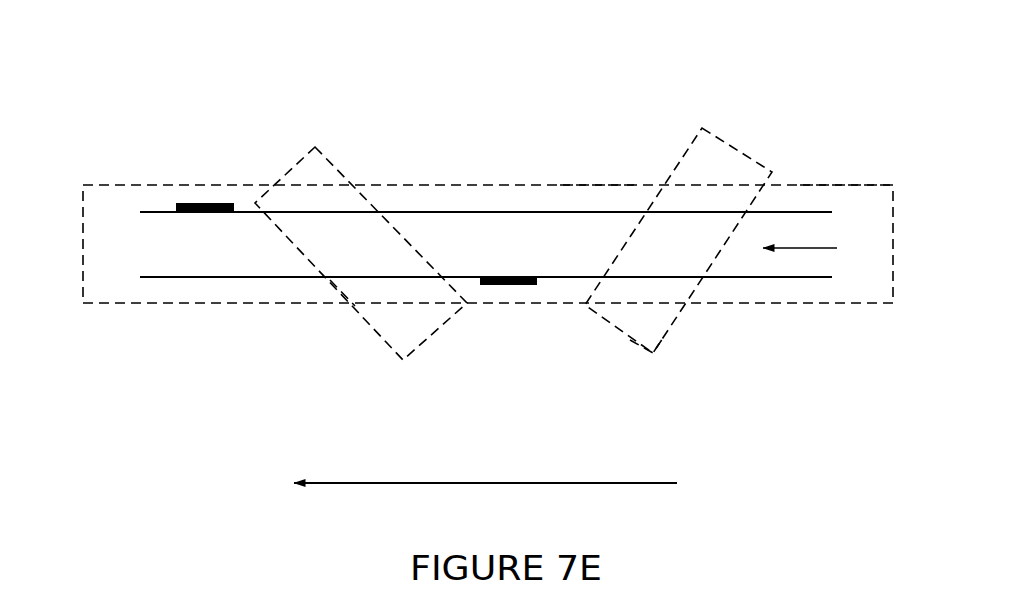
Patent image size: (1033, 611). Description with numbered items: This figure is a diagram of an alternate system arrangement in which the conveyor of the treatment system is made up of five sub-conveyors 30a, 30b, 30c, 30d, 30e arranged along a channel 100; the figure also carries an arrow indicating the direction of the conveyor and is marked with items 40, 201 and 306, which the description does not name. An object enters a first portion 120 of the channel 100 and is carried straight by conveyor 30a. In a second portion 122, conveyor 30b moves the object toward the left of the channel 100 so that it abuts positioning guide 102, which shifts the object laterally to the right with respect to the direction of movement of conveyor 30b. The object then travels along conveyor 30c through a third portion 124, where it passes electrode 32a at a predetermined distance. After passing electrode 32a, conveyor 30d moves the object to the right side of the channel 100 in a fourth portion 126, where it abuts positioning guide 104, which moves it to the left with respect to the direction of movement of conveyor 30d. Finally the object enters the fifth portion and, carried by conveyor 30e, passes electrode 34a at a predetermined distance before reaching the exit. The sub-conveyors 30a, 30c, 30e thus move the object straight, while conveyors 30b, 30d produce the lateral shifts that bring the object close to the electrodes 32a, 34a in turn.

The conveyor 30a is at (837, 181).
The conveyor 30b is at (722, 130).
The conveyor 30c is at (588, 179).
The conveyor 30d is at (292, 172).
The conveyor 30e is at (98, 178).
The electrode 32a is at (502, 293).
The electrode 34a is at (212, 196).
The article edge 40 is at (833, 214).
The channel 100 is at (825, 247).
The positioning guide 102 is at (641, 289).
The positioning guide 104 is at (320, 206).
The first portion 120 is at (778, 284).
The second portion 122 is at (702, 208).
The third portion 124 is at (523, 208).
The fourth portion 126 is at (353, 289).
The direction of conveyor 201 is at (636, 475).
The sensor zone corner 306 is at (657, 363).